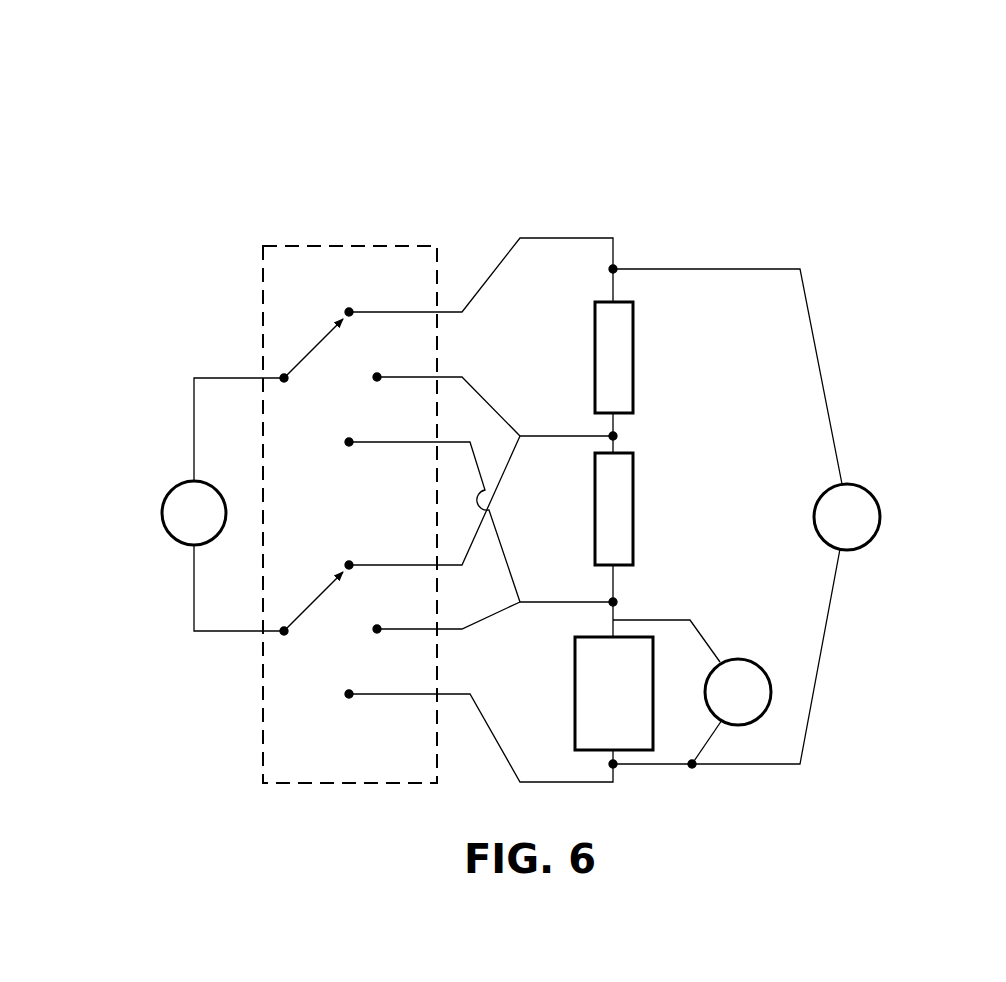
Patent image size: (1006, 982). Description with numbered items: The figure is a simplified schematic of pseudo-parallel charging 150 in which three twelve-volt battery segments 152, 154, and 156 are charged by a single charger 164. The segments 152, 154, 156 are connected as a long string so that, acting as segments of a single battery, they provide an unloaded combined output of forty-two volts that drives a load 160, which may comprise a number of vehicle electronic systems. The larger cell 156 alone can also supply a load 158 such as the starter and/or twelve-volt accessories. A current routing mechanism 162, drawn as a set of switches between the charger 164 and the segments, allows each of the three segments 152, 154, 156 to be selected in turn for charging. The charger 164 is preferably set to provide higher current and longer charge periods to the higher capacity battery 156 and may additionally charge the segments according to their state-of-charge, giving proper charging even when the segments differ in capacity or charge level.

The pseudo-parallel charging 150 is at (745, 147).
The battery segment 152 is at (633, 345).
The battery segment 154 is at (633, 498).
The battery segment 156 is at (575, 685).
The load 158 is at (740, 658).
The load 160 is at (880, 520).
The current routing mechanism 162 is at (373, 245).
The charger 164 is at (165, 518).